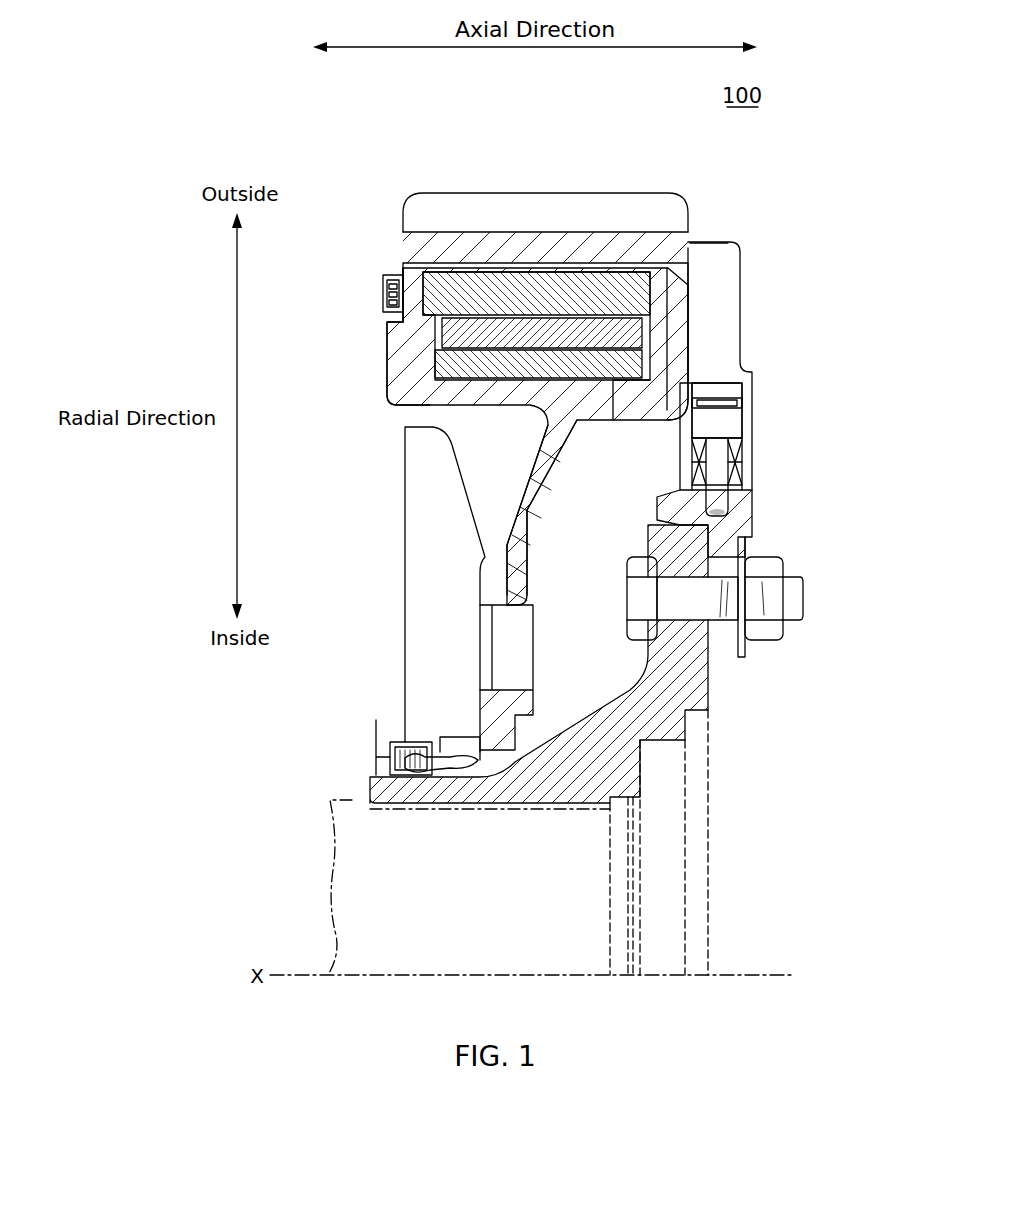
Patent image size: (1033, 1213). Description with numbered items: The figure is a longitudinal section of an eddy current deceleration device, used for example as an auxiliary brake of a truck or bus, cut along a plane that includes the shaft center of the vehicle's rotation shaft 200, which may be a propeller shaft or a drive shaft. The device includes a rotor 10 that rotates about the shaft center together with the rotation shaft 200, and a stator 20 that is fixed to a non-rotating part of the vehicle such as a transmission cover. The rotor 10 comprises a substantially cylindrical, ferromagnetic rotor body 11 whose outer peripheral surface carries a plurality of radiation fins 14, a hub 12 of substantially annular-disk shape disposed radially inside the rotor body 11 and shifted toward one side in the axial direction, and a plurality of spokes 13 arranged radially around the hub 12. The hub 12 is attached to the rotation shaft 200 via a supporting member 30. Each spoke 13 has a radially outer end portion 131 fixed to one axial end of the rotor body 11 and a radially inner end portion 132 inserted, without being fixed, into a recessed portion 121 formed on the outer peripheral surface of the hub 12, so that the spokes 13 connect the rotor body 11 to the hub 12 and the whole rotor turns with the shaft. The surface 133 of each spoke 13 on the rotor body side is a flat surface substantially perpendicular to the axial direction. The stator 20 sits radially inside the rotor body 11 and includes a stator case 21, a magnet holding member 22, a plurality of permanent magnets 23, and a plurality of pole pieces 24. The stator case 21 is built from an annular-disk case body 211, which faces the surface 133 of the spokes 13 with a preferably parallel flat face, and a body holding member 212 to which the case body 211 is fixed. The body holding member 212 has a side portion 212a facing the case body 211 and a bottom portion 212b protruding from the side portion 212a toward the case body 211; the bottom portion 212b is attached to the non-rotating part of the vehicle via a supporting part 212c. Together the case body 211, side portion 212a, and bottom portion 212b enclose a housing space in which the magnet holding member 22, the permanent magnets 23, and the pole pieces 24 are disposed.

The rotor 10 is at (590, 472).
The rotor body 11 is at (600, 250).
The radiation fins 14 is at (645, 215).
The hub 12 is at (606, 500).
The recessed portion 121 is at (715, 462).
The spokes 13 is at (606, 497).
The end portion 131 is at (708, 242).
The end portion 132 is at (720, 400).
The surface 133 is at (662, 385).
The stator 20 is at (392, 258).
The stator case 21 is at (740, 252).
The case body 211 is at (683, 313).
The body holding member 212 is at (561, 500).
The side portion 212a is at (405, 357).
The bottom portion 212b is at (583, 432).
The supporting part 212c is at (513, 493).
The magnet holding member 22 is at (478, 365).
The permanent magnets 23 is at (515, 332).
The pole pieces 24 is at (560, 292).
The supporting member 30 is at (712, 676).
The rotation shaft 200 is at (352, 798).